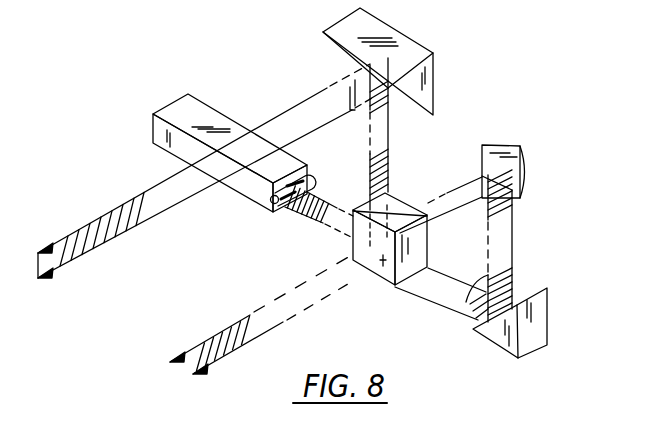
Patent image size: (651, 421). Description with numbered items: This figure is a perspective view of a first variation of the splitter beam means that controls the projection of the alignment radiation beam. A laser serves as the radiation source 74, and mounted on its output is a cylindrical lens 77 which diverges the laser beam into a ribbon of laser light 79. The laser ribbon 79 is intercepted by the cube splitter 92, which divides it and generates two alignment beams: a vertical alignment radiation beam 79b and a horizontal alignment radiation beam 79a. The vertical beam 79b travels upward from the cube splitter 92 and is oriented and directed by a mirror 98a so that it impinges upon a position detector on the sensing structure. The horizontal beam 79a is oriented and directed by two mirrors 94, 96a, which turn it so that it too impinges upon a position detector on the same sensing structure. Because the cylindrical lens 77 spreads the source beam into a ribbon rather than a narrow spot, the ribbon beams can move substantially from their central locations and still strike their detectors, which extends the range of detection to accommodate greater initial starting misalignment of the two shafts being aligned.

The radiation source 74 is at (180, 108).
The cylindrical lens 77 is at (273, 202).
The ribbon of laser light 79 is at (327, 221).
The horizontal alignment radiation beam 79a is at (262, 325).
The vertical alignment radiation beam 79b is at (352, 100).
The cube splitter 92 is at (390, 278).
The mirror 94 is at (535, 325).
The mirror 96a is at (500, 152).
The mirror 98a is at (398, 40).